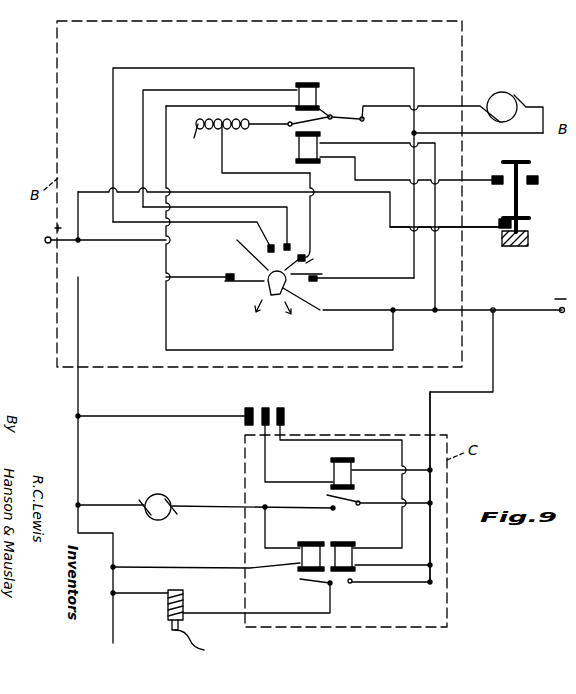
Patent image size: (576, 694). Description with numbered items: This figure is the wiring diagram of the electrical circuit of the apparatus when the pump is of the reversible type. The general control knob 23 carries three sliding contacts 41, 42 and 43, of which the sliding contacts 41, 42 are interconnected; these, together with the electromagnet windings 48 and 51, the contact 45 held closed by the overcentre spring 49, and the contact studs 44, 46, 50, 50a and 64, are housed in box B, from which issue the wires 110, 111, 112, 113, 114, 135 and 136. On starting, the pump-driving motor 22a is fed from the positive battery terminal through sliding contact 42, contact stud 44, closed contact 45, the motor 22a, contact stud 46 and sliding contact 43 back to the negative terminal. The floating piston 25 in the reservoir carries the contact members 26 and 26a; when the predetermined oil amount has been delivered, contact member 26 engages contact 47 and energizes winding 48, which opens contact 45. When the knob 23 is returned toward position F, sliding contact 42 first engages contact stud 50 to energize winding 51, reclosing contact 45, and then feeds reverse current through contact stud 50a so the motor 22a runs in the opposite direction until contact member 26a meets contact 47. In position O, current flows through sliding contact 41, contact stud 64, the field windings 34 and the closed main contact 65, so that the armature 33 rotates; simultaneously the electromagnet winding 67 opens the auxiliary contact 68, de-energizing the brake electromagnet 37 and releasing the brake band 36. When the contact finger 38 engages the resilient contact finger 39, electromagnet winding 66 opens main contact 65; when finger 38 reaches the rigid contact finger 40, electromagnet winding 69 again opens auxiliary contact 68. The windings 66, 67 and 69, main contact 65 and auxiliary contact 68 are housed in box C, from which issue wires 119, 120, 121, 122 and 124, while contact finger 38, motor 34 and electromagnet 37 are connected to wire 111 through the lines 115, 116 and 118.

The wire 110 is at (47, 244).
The wire 111 is at (84, 370).
The wire 112 is at (477, 312).
The wire 113 is at (470, 226).
The wire 114 is at (470, 178).
The line 115 is at (172, 417).
The line 116 is at (104, 504).
The line 118 is at (132, 592).
The wire 119 is at (259, 438).
The wire 120 is at (284, 430).
The wire 121 is at (211, 505).
The wire 122 is at (210, 566).
The wire 124 is at (432, 413).
The wire 135 is at (438, 102).
The wire 136 is at (433, 131).
The pump-driving motor 22a is at (497, 102).
The general control knob 23 is at (274, 297).
The floating piston 25 is at (529, 240).
The contact member 26 is at (520, 164).
The contact member 26a is at (530, 219).
The contact 47 is at (538, 178).
The armature 33 is at (153, 520).
The field windings 34 is at (158, 494).
The brake band 36 is at (205, 650).
The electromagnet 37 is at (166, 610).
The contact finger 38 is at (247, 408).
The contact finger 39 is at (265, 408).
The contact finger 40 is at (280, 408).
The sliding contact 41 is at (238, 283).
The sliding contact 42 is at (306, 256).
The sliding contact 43 is at (315, 272).
The contact stud 44 is at (308, 262).
The contact 45 is at (333, 114).
The contact stud 46 is at (320, 281).
The winding 48 is at (293, 151).
The overcentre spring 49 is at (244, 146).
The contact stud 50 is at (291, 246).
The contact stud 50a is at (266, 248).
The winding 51 is at (318, 100).
The contact stud 64 is at (228, 273).
The main contact 65 is at (336, 511).
The electromagnet winding 66 is at (333, 472).
The electromagnet winding 67 is at (310, 541).
The auxiliary contact 68 is at (331, 586).
The electromagnet winding 69 is at (355, 545).